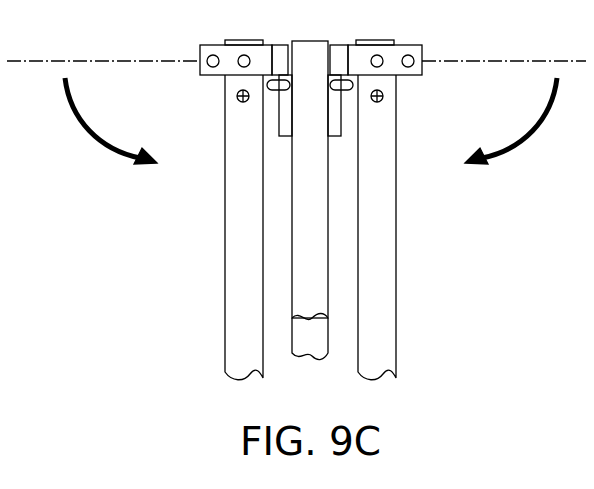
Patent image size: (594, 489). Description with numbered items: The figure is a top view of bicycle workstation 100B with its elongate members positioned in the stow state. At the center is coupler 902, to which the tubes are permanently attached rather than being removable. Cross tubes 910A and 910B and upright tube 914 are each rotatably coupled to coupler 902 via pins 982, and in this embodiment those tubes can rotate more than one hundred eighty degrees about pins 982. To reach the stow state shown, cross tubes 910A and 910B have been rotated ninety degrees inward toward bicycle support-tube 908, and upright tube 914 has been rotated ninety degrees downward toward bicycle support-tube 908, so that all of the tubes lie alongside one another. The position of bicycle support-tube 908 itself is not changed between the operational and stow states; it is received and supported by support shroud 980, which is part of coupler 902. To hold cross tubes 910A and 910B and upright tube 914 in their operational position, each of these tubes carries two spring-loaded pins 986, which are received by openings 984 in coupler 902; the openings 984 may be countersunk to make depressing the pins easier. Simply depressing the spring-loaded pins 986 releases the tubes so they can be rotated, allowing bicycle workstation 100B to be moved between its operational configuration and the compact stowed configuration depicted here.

The coupler 902 is at (188, 74).
The support shroud 980 is at (287, 118).
The pins 982 is at (378, 58).
The openings 984 is at (410, 57).
The spring-loaded pins 986 is at (385, 92).
The cross tube 910A is at (230, 253).
The cross tube 910B is at (390, 300).
The upright tube 914 is at (308, 278).
The bicycle support-tube 908 is at (305, 343).
The bicycle workstation 100B is at (470, 308).